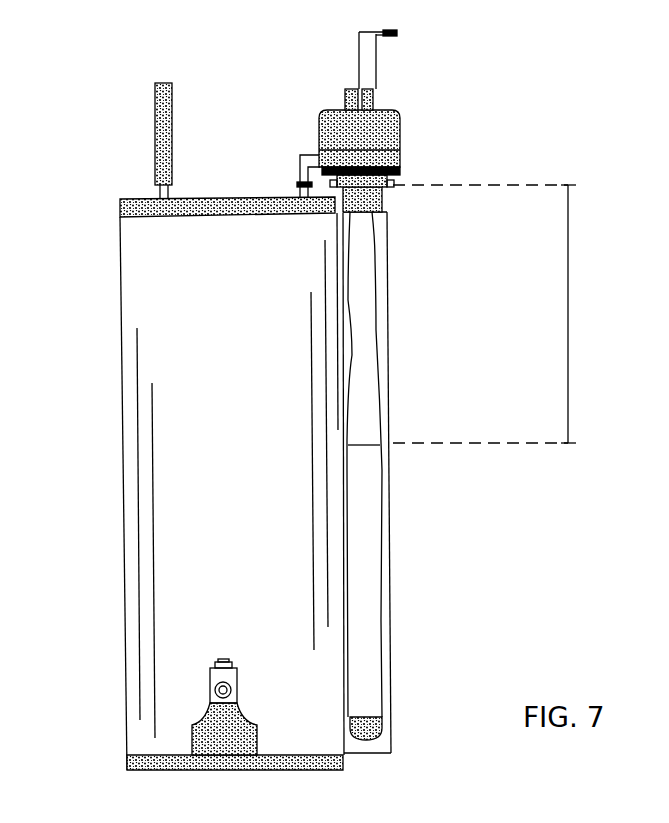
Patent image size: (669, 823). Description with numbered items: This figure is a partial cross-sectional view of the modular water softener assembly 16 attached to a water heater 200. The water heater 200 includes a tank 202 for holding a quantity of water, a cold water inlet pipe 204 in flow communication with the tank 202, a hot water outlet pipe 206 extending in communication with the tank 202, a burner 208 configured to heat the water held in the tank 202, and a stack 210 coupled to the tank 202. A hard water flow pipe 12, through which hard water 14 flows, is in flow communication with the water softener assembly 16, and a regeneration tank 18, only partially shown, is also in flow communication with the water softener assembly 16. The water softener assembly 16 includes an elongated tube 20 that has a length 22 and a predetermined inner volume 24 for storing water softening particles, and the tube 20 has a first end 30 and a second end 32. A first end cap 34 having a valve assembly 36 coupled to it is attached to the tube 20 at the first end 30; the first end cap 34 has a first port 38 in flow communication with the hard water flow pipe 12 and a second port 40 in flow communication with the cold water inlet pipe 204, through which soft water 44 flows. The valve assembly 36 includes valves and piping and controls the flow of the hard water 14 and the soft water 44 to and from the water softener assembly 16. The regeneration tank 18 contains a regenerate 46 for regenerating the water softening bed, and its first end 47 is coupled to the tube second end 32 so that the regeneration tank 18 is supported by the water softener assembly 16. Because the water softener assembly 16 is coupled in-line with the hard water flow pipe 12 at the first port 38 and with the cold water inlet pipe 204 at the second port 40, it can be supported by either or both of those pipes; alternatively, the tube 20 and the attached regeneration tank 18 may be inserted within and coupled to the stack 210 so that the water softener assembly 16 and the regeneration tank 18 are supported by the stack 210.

The hard water flow pipe 12 is at (371, 33).
The hard water 14 is at (397, 33).
The water softener assembly 16 is at (422, 178).
The regeneration tank 18 is at (388, 504).
The elongated tube 20 is at (362, 260).
The length 22 is at (568, 312).
The inner volume 24 is at (356, 312).
The first end 30 is at (383, 202).
The second end 32 is at (370, 445).
The first end cap 34 is at (390, 182).
The valve assembly 36 is at (401, 126).
The first port 38 is at (374, 96).
The second port 40 is at (298, 180).
The soft water 44 is at (302, 170).
The regenerate 46 is at (383, 727).
The first end 47 is at (390, 457).
The water heater 200 is at (145, 287).
The tank 202 is at (178, 397).
The cold water inlet pipe 204 is at (293, 188).
The hot water outlet pipe 206 is at (155, 148).
The burner 208 is at (220, 750).
The stack 210 is at (405, 643).